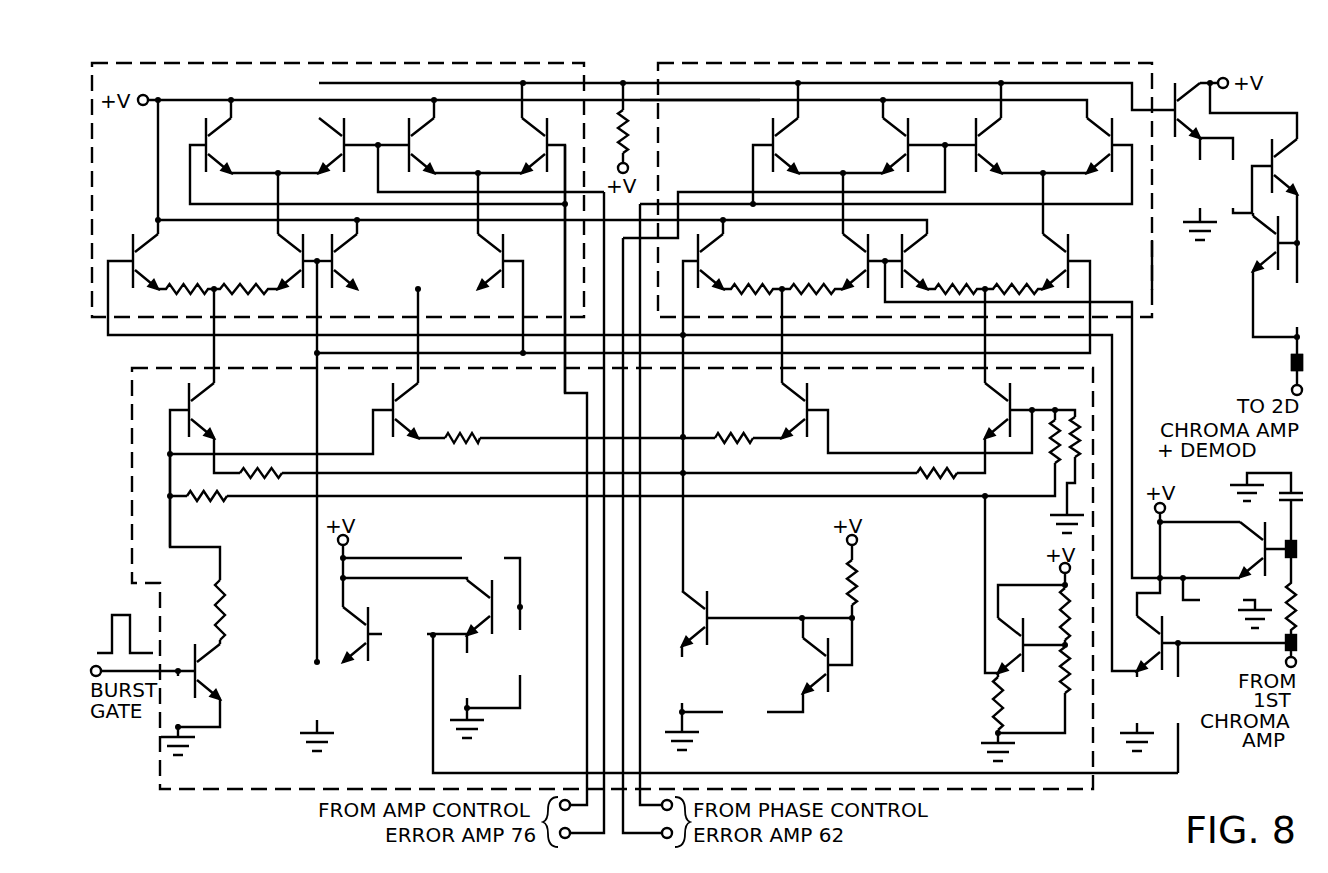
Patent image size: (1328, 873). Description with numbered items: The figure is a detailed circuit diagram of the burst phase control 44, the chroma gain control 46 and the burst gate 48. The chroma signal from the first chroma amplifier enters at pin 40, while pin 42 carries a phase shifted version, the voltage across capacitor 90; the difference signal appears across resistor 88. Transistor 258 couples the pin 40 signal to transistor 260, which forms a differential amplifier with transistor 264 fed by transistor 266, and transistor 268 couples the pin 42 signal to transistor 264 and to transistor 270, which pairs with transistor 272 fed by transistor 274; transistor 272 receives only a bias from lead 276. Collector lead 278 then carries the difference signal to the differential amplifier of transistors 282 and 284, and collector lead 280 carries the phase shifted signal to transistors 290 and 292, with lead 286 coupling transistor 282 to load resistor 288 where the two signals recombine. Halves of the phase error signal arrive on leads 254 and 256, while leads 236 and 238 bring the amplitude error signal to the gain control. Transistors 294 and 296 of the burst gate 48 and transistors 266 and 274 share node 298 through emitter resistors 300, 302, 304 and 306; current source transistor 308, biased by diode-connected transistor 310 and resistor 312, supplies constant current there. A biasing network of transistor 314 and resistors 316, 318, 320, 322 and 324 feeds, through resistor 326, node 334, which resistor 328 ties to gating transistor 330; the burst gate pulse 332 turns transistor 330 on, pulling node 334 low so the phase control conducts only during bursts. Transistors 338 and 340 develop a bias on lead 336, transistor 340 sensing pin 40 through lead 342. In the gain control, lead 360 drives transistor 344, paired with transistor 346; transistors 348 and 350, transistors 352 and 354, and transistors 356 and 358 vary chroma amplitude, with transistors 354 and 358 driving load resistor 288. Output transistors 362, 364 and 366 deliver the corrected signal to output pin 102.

The burst phase control 44 is at (1003, 63).
The chroma gain control 46 is at (233, 63).
The burst gate 48 is at (247, 789).
The pin 40 is at (1285, 644).
The pin 42 is at (1288, 540).
The resistor 88 is at (1288, 612).
The capacitor 90 is at (1252, 476).
The output pin 102 is at (1290, 363).
The lead 236 is at (603, 764).
The lead 238 is at (586, 740).
The lead 254 is at (641, 742).
The lead 256 is at (623, 764).
The transistor 258 is at (1162, 643).
The transistor 260 is at (706, 262).
The transistor 264 is at (862, 260).
The transistor 266 is at (795, 402).
The transistor 268 is at (1262, 550).
The transistor 270 is at (940, 262).
The transistor 272 is at (1064, 258).
The transistor 274 is at (1006, 406).
The lead 276 is at (1090, 270).
The collector lead 278 is at (842, 228).
The collector lead 280 is at (1043, 232).
The transistor 282 is at (782, 144).
The transistor 284 is at (904, 148).
The lead 286 is at (712, 100).
The load resistor 288 is at (617, 122).
The transistor 290 is at (984, 142).
The transistor 292 is at (1106, 148).
The transistor 294 is at (200, 413).
The transistor 296 is at (405, 412).
The node 298 is at (683, 437).
The emitter resistor 300 is at (283, 443).
The emitter resistor 302 is at (468, 430).
The emitter resistor 304 is at (760, 412).
The emitter resistor 306 is at (924, 478).
The current source transistor 308 is at (704, 618).
The diode-connected transistor 310 is at (824, 667).
The resistor 312 is at (848, 588).
The transistor 314 is at (1008, 647).
The resistor 316 is at (1052, 455).
The resistor 318 is at (1072, 415).
The resistor 320 is at (994, 712).
The resistor 322 is at (1062, 676).
The resistor 324 is at (1060, 606).
The resistor 326 is at (212, 503).
The resistor 328 is at (230, 606).
The gating transistor 330 is at (205, 673).
The burst gate pulse 332 is at (138, 622).
The node 334 is at (171, 498).
The lead 336 is at (316, 556).
The transistor 338 is at (370, 636).
The transistor 340 is at (488, 606).
The lead 342 is at (845, 773).
The transistor 344 is at (145, 256).
The transistor 346 is at (298, 254).
The transistor 348 is at (341, 258).
The transistor 350 is at (500, 259).
The transistor 352 is at (212, 142).
The transistor 354 is at (338, 146).
The transistor 356 is at (416, 142).
The transistor 358 is at (540, 146).
The lead 360 is at (108, 306).
The output transistor 362 is at (1176, 128).
The output transistor 364 is at (1274, 250).
The output transistor 366 is at (1270, 148).